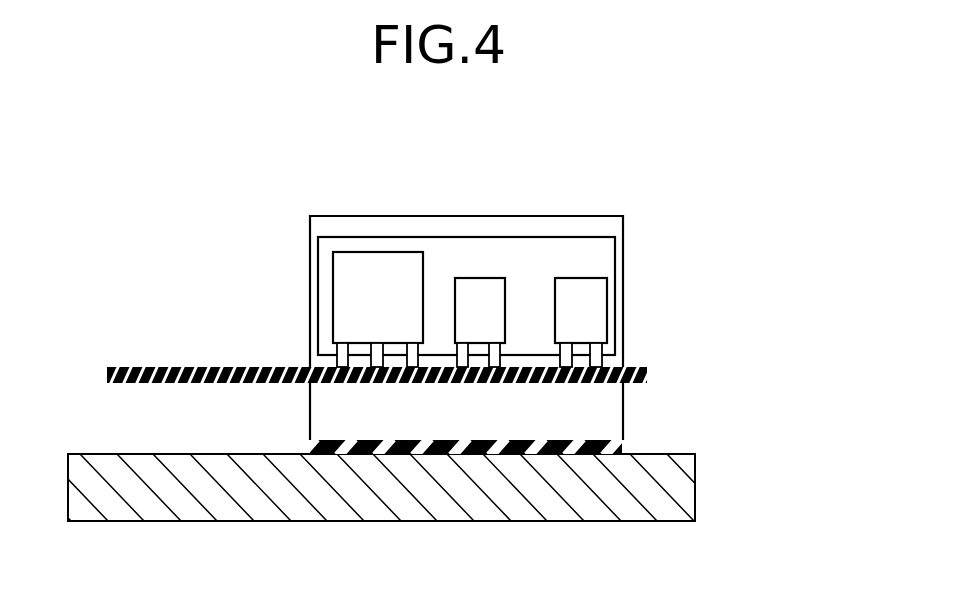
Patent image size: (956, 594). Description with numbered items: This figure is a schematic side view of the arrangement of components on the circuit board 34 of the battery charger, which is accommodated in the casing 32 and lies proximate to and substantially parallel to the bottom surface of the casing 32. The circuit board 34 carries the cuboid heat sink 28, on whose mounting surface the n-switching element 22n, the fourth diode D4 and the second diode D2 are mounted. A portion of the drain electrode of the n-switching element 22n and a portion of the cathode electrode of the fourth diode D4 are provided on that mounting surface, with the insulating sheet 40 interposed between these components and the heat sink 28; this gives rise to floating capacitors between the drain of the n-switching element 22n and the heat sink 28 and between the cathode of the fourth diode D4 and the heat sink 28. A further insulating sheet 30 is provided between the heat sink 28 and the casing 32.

The n-switching element 22n is at (358, 265).
The insulating sheet 40 is at (433, 252).
The fourth diode D4 is at (483, 292).
The second diode D2 is at (577, 292).
The heat sink 28 is at (595, 217).
The circuit board 34 is at (120, 367).
The casing 32 is at (80, 454).
The insulating sheet 30 is at (308, 447).